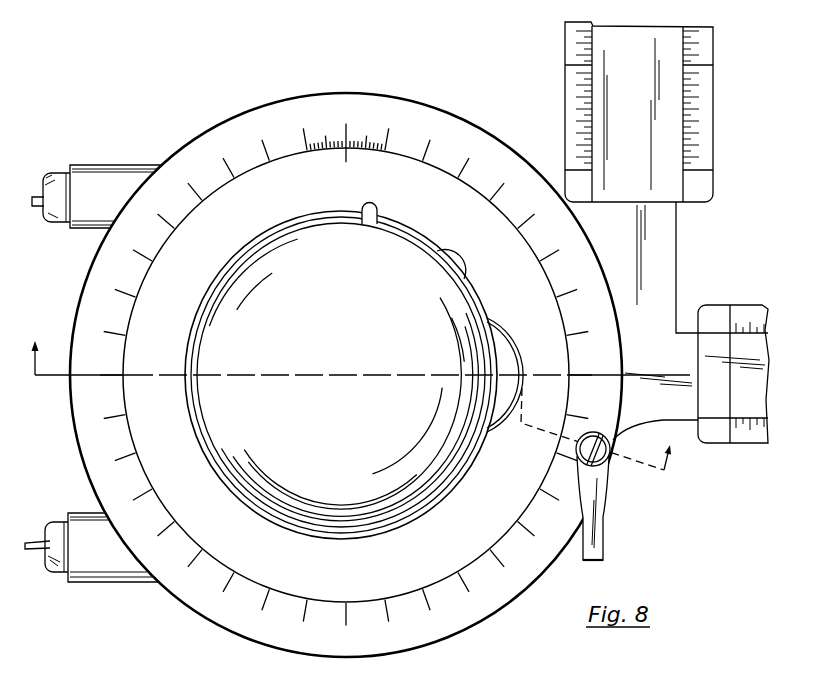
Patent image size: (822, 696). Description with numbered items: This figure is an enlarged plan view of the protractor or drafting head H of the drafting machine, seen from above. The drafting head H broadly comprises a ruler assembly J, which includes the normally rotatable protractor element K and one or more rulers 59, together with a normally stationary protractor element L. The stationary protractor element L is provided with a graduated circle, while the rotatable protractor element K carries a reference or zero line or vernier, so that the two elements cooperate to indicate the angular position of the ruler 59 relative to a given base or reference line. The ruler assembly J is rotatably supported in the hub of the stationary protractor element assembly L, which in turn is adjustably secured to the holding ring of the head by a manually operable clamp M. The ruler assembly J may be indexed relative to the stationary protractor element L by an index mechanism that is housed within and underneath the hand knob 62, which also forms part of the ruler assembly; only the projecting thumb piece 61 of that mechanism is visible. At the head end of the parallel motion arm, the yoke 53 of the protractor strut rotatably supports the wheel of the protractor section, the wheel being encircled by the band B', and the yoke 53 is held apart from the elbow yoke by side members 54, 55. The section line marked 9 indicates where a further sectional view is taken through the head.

The yoke 53 is at (102, 558).
The side member 54 is at (63, 185).
The side member 55 is at (65, 562).
The ruler 59 is at (612, 33).
The thumb piece 61 is at (502, 347).
The hand knob 62 is at (341, 409).
The section line 9- 9 is at (358, 395).
The stationary protractor element L is at (228, 133).
The rotatable protractor element K is at (273, 577).
The protractor or drafting head H is at (398, 246).
The ruler assembly J is at (667, 252).
The manually operable clamp M is at (600, 541).
The band B' is at (37, 519).